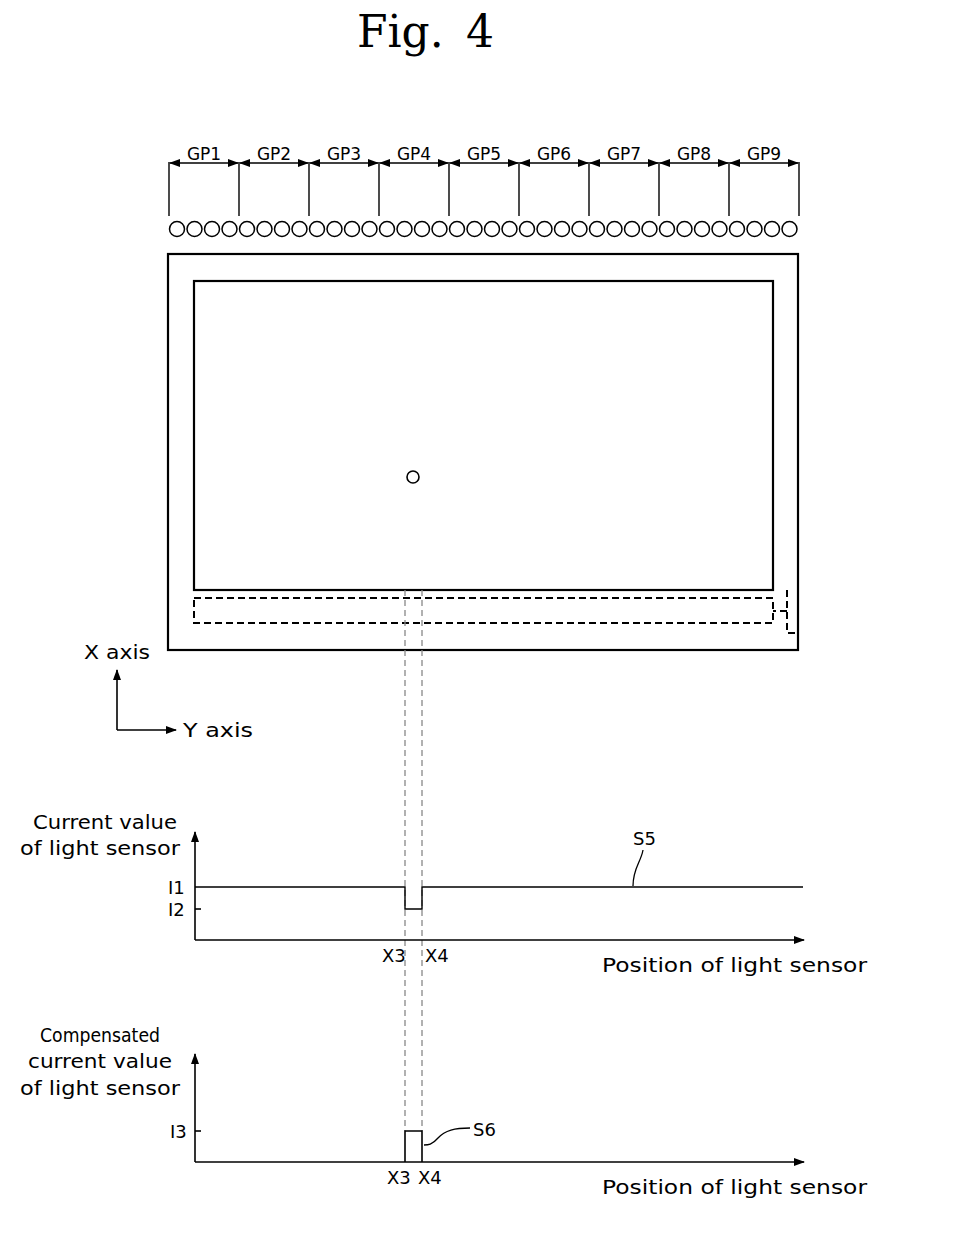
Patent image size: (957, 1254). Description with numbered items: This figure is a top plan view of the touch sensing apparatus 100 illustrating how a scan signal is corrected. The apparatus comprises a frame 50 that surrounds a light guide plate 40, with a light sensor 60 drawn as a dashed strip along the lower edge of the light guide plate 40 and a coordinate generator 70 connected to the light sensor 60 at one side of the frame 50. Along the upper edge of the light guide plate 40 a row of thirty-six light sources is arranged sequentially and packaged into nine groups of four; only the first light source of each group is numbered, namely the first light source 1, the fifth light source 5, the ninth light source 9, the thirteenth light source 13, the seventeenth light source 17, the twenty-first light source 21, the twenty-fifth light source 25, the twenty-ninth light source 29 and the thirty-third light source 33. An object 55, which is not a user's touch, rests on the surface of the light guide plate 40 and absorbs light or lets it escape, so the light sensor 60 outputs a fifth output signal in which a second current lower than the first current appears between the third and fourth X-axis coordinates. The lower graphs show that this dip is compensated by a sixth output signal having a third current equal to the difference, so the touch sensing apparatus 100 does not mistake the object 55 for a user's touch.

The touch sensing apparatus 100 is at (517, 439).
The frame 50 is at (790, 371).
The light guide plate 40 is at (775, 451).
The object 55 is at (417, 471).
The light sensor 60 is at (655, 624).
The coordinate generator 70 is at (797, 590).
The first light source 1 is at (177, 221).
The fifth light source 5 is at (247, 221).
The ninth light source 9 is at (317, 221).
The thirteenth light source 13 is at (387, 221).
The seventeenth light source 17 is at (457, 221).
The twenty-first light source 21 is at (527, 221).
The twenty-fifth light source 25 is at (597, 221).
The twenty-ninth light source 29 is at (667, 221).
The thirty-third light source 33 is at (737, 221).